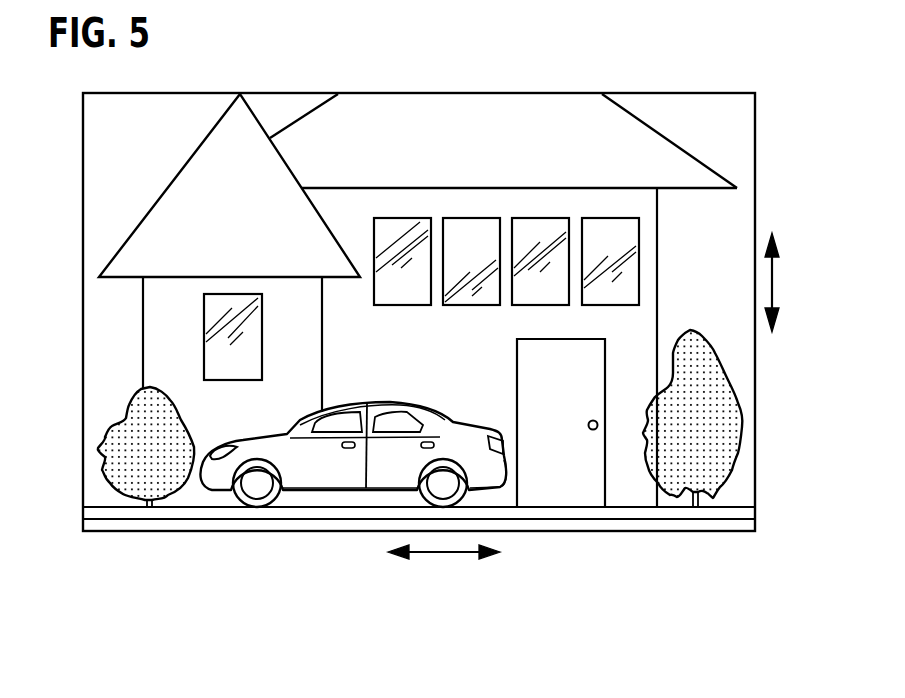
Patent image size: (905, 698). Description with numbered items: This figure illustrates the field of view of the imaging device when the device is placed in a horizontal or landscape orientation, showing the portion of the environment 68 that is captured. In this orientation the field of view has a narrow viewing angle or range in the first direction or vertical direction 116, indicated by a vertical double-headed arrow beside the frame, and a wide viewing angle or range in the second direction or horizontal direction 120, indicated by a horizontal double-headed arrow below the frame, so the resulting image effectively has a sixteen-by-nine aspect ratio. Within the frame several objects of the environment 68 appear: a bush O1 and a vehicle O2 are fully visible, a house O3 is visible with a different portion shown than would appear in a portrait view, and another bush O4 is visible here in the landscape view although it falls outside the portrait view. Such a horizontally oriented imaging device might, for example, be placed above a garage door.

The environment 68 is at (112, 166).
The bush O1 is at (115, 457).
The vehicle O2 is at (245, 440).
The house O3 is at (135, 256).
The bush O4 is at (727, 436).
The vertical direction 116 is at (773, 281).
The horizontal direction 120 is at (447, 556).